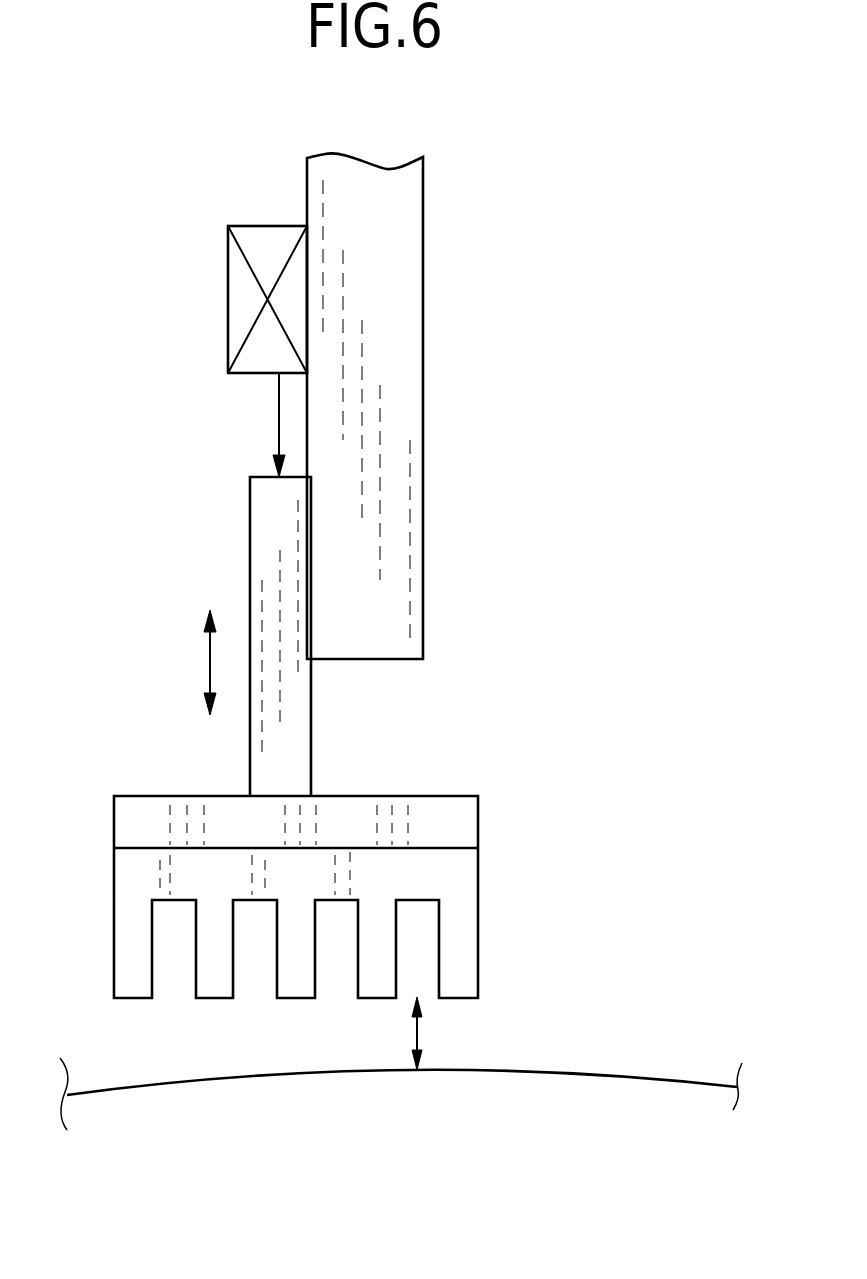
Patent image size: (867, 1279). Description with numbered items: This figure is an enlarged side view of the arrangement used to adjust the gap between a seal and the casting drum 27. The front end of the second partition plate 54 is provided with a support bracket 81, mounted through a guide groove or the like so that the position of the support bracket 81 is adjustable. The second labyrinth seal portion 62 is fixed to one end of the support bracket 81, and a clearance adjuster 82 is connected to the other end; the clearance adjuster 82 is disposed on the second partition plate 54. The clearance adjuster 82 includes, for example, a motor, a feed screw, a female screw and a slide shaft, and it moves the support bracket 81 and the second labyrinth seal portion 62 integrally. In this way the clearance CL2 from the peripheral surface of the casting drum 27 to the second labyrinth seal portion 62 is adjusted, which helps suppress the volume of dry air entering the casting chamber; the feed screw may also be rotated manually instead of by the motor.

The casting drum 27 is at (648, 1078).
The second partition plate 54 is at (425, 408).
The second labyrinth seal portion 62 is at (122, 885).
The support bracket 81 is at (250, 543).
The clearance adjuster 82 is at (228, 290).
The clearance CL2 is at (446, 1033).